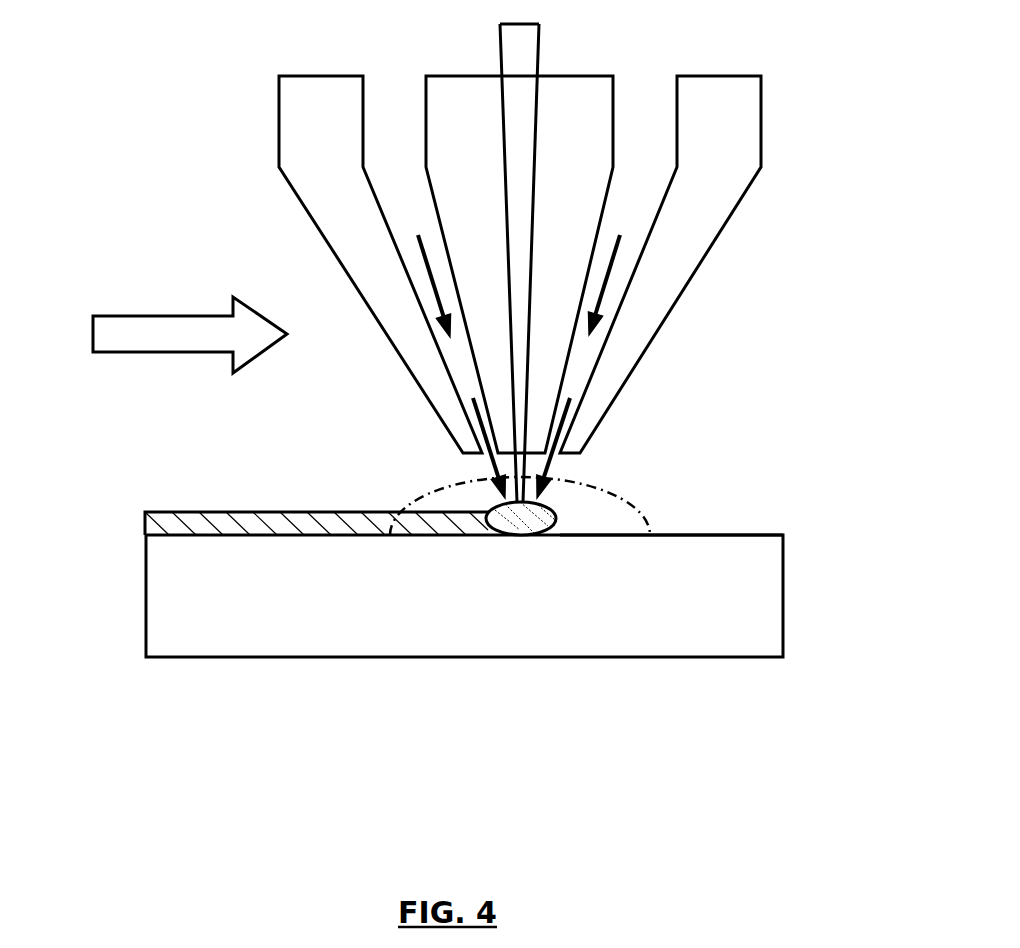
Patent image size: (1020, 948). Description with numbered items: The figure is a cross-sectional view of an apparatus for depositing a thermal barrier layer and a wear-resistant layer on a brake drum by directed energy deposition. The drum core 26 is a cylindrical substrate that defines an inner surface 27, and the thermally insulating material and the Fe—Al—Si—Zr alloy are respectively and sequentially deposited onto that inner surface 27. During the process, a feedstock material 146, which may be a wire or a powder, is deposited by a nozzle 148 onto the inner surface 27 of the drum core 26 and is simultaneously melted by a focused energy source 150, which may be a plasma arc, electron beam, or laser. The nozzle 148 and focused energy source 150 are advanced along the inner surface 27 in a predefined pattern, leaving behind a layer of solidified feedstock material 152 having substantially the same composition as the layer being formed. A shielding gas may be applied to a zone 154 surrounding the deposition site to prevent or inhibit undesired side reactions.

The drum core 26 is at (146, 634).
The inner surface 27 is at (753, 533).
The feedstock material 146 is at (608, 283).
The nozzle 148 is at (761, 128).
The focused energy source 150 is at (539, 47).
The layer of solidified feedstock material 152 is at (145, 527).
The zone 154 is at (623, 498).